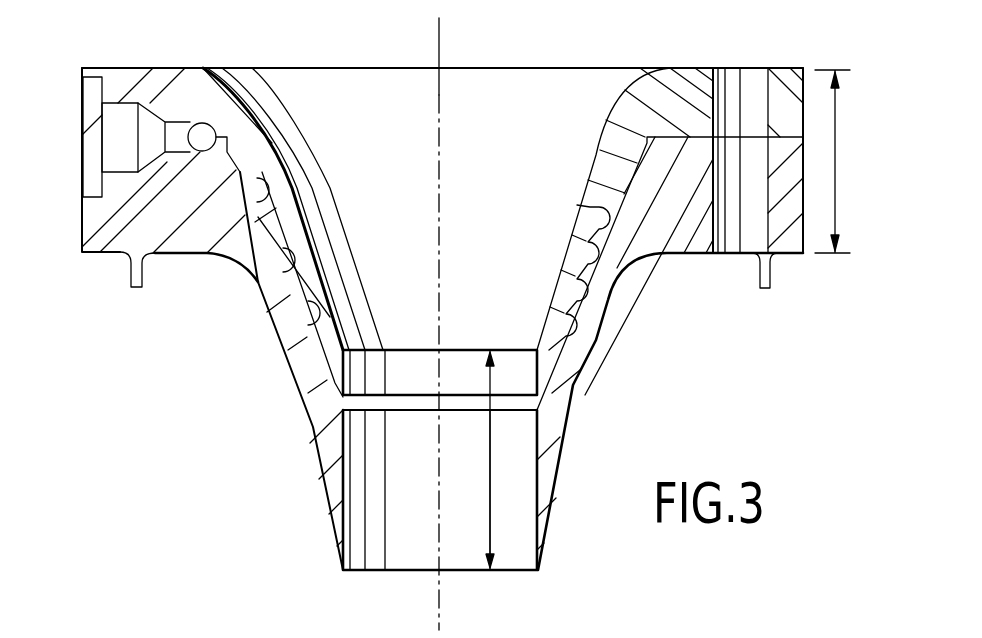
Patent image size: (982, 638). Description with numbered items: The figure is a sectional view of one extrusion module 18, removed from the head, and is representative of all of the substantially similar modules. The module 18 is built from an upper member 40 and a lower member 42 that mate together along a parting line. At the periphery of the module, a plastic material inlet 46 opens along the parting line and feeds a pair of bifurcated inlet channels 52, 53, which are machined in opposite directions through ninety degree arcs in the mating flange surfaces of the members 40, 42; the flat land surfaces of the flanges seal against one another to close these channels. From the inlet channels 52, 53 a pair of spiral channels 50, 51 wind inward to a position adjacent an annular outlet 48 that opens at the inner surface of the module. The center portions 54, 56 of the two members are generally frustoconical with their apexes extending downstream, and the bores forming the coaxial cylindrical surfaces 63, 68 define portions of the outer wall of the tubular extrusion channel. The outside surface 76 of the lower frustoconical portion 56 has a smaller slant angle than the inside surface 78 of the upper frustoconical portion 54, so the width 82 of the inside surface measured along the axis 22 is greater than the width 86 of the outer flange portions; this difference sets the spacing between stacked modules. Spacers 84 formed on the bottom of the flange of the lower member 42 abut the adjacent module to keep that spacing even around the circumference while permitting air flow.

The module 18 is at (60, 123).
The axis 22 is at (440, 38).
The upper member 40 is at (682, 82).
The lower member 42 is at (675, 248).
The plastic material inlet 46 is at (107, 158).
The annular outlet 48 is at (463, 400).
The spiral channel 50 is at (250, 278).
The spiral channel 51 is at (312, 317).
The bifurcated inlet channel 52 is at (203, 123).
The bifurcated inlet channel 53 is at (203, 124).
The center portion of upper member 54 is at (578, 237).
The center portion of lower member 56 is at (308, 387).
The cylindrical surface 63 is at (407, 565).
The cylindrical surface 68 is at (402, 365).
The outside surface of lower frustoconical portion 76 is at (322, 487).
The inside surface of upper frustoconical portion 78 is at (317, 237).
The width of inside surface 82 is at (490, 482).
The spacers 84 is at (133, 281).
The width of outer portions 86 is at (838, 127).